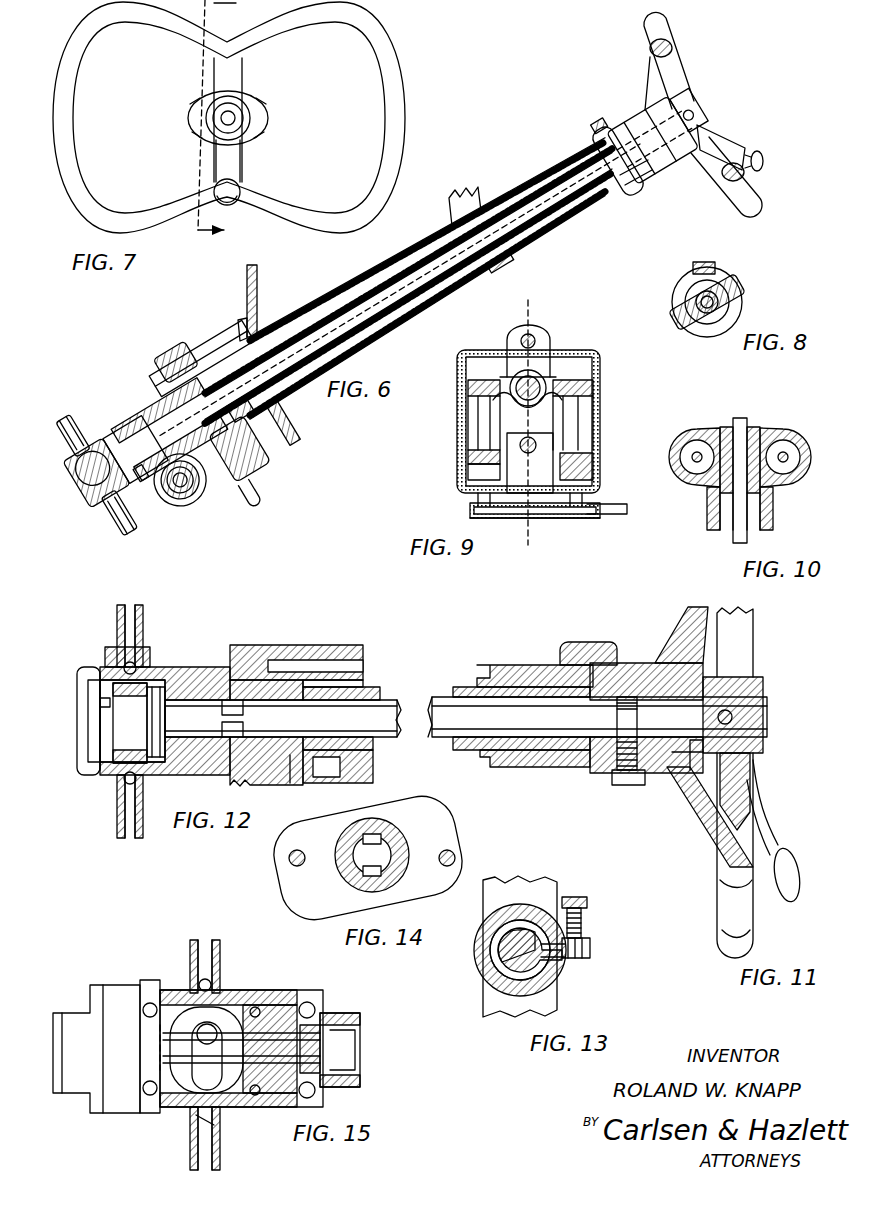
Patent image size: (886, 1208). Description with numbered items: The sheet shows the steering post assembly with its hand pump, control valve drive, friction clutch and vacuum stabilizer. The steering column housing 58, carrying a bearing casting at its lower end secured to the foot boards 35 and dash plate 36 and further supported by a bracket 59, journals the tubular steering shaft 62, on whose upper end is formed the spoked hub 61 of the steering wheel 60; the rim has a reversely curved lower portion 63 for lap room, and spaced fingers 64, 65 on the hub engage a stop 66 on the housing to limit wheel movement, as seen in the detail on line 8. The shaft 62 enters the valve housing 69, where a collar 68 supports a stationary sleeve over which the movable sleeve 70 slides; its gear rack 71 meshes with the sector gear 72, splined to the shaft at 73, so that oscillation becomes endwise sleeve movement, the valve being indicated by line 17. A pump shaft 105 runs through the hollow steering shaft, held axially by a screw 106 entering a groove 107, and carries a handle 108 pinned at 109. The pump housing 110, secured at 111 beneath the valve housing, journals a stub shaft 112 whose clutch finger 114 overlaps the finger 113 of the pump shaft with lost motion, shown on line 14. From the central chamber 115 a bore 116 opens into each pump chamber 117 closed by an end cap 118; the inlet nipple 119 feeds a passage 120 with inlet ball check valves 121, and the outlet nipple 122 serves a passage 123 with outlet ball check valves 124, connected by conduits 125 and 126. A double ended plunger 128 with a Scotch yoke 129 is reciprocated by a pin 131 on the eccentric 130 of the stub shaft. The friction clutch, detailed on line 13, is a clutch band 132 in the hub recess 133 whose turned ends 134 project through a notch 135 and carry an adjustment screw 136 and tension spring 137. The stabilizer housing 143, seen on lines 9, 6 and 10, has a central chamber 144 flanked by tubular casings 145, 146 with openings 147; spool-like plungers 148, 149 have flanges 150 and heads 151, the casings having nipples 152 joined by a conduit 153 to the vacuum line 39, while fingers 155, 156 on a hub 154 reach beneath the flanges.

In FIG. 9, the section line 6— 6 is at (550, 297).
In FIG. 6, the section line 8— 8 is at (622, 110).
In FIG. 6, the section line 9— 9 is at (175, 356).
In FIG. 9, the section line 10— 10 is at (438, 418).
In FIG. 11, the section line 13— 13 is at (697, 655).
In FIG. 12, the section line 14— 14 is at (245, 615).
In FIG. 6, the section line 17— 17 is at (131, 372).
In FIG. 6, the foot boards 35 is at (290, 428).
In FIG. 6, the dash plate 36 is at (258, 269).
In FIG. 9, the vacuum line 39 is at (626, 515).
In FIG. 6, the steering column housing 58 is at (383, 278).
In FIG. 8, the steering column housing 58 is at (740, 320).
In FIG. 10, the steering column housing 58 is at (770, 517).
In FIG. 11, the steering column housing 58 is at (493, 666).
In FIG. 6, the bracket 59 is at (505, 265).
In FIG. 7, the steering wheel 60 is at (410, 95).
In FIG. 6, the steering wheel 60 is at (697, 80).
In FIG. 11, the steering wheel 60 is at (757, 630).
In FIG. 6, the spoked hub 61 is at (639, 125).
In FIG. 11, the spoked hub 61 is at (660, 663).
In FIG. 13, the spoked hub 61 is at (545, 985).
In FIG. 7, the tubular steering column or shaft 62 is at (273, 43).
In FIG. 6, the tubular steering column or shaft 62 is at (438, 250).
In FIG. 8, the tubular steering column or shaft 62 is at (705, 320).
In FIG. 9, the tubular steering column or shaft 62 is at (540, 380).
In FIG. 10, the tubular steering column or shaft 62 is at (728, 530).
In FIG. 11, the tubular steering column or shaft 62 is at (462, 688).
In FIG. 12, the tubular steering column or shaft 62 is at (365, 690).
In FIG. 7, the reversely curved rim portion 63 is at (297, 200).
In FIG. 11, the reversely curved rim portion 63 is at (720, 875).
In FIG. 7, the radially projecting finger 64 is at (186, 115).
In FIG. 6, the radially projecting finger 64 is at (640, 172).
In FIG. 8, the radially projecting finger 64 is at (672, 298).
In FIG. 7, the radially projecting finger 65 is at (252, 110).
In FIG. 8, the radially projecting finger 65 is at (738, 290).
In FIG. 6, the stop 66 is at (616, 114).
In FIG. 8, the stop 66 is at (714, 265).
In FIG. 11, the stop 66 is at (596, 634).
In FIG. 6, the collar 68 is at (175, 498).
In FIG. 6, the valve housing 69 is at (160, 385).
In FIG. 12, the valve housing 69 is at (305, 645).
In FIG. 6, the outer movable sleeve 70 is at (195, 497).
In FIG. 12, the gear rack 71 is at (366, 770).
In FIG. 6, the sector gear 72 is at (156, 487).
In FIG. 12, the sector gear 72 is at (300, 760).
In FIG. 12, the spline 73 is at (355, 680).
In FIG. 7, the pump shaft 105 is at (232, 123).
In FIG. 6, the pump shaft 105 is at (420, 278).
In FIG. 10, the pump shaft 105 is at (740, 420).
In FIG. 11, the pump shaft 105 is at (597, 697).
In FIG. 12, the pump shaft 105 is at (395, 737).
In FIG. 14, the pump shaft 105 is at (385, 858).
In FIG. 13, the pump shaft 105 is at (505, 965).
In FIG. 11, the screw 106 is at (628, 785).
In FIG. 11, the peripheral groove 107 is at (628, 697).
In FIG. 7, the handle 108 is at (230, 170).
In FIG. 6, the handle 108 is at (728, 151).
In FIG. 11, the handle 108 is at (760, 835).
In FIG. 6, the pin 109 is at (692, 118).
In FIG. 11, the pin 109 is at (735, 717).
In FIG. 6, the pump housing 110 is at (92, 443).
In FIG. 12, the pump housing 110 is at (188, 668).
In FIG. 14, the pump housing 110 is at (300, 893).
In FIG. 15, the pump housing 110 is at (125, 995).
In FIG. 14, the securing point 111 is at (290, 862).
In FIG. 6, the stub shaft 112 is at (120, 468).
In FIG. 12, the stub shaft 112 is at (185, 737).
In FIG. 12, the clutch finger 113 is at (235, 700).
In FIG. 14, the clutch finger 113 is at (378, 843).
In FIG. 12, the clutch finger 114 is at (237, 740).
In FIG. 14, the clutch finger 114 is at (368, 874).
In FIG. 12, the central chamber 115 is at (100, 725).
In FIG. 15, the central chamber 115 is at (235, 1012).
In FIG. 15, the bore 116 is at (268, 1108).
In FIG. 15, the pump chamber 117 is at (345, 1047).
In FIG. 15, the end cap 118 is at (53, 1020).
In FIG. 12, the inlet nipple 119 is at (122, 808).
In FIG. 15, the inlet nipple 119 is at (190, 1152).
In FIG. 12, the inlet passage 120 is at (136, 780).
In FIG. 15, the inlet passage 120 is at (213, 1125).
In FIG. 15, the inlet ball check valve 121 is at (316, 1093).
In FIG. 12, the outlet nipple 122 is at (135, 632).
In FIG. 15, the outlet nipple 122 is at (210, 965).
In FIG. 12, the outlet passage 123 is at (123, 665).
In FIG. 15, the outlet passage 123 is at (168, 998).
In FIG. 15, the outlet ball check valve 124 is at (315, 1010).
In FIG. 6, the inlet conduit 125 is at (113, 521).
In FIG. 12, the inlet conduit 125 is at (120, 834).
In FIG. 15, the inlet conduit 125 is at (220, 1165).
In FIG. 6, the outlet conduit 126 is at (62, 410).
In FIG. 12, the outlet conduit 126 is at (142, 608).
In FIG. 15, the outlet conduit 126 is at (212, 945).
In FIG. 12, the double ended plunger 128 is at (86, 752).
In FIG. 15, the double ended plunger 128 is at (322, 1025).
In FIG. 12, the Scotch yoke 129 is at (97, 772).
In FIG. 12, the eccentric 130 is at (158, 687).
In FIG. 12, the pin 131 is at (100, 702).
In FIG. 15, the pin 131 is at (210, 1027).
In FIG. 11, the clutch band 132 is at (738, 682).
In FIG. 13, the clutch band 132 is at (491, 950).
In FIG. 11, the recess 133 is at (690, 765).
In FIG. 13, the recess 133 is at (500, 935).
In FIG. 13, the turned ends 134 is at (592, 955).
In FIG. 13, the notch 135 is at (560, 965).
In FIG. 13, the adjustment screw 136 is at (580, 898).
In FIG. 13, the tension spring 137 is at (582, 918).
In FIG. 6, the stabilizer housing 143 is at (272, 456).
In FIG. 9, the stabilizer housing 143 is at (600, 358).
In FIG. 6, the central chamber 144 is at (268, 412).
In FIG. 9, the central chamber 144 is at (513, 370).
In FIG. 9, the tubular casing 145 is at (468, 440).
In FIG. 9, the tubular casing 146 is at (594, 438).
In FIG. 9, the opening 147 is at (560, 425).
In FIG. 9, the operating plunger 148 is at (478, 423).
In FIG. 9, the operating plunger 149 is at (580, 424).
In FIG. 9, the annular flange 150 is at (594, 385).
In FIG. 9, the head portion 151 is at (470, 468).
In FIG. 6, the nipple 152 is at (262, 491).
In FIG. 9, the nipple 152 is at (470, 382).
In FIG. 9, the conduit 153 is at (543, 519).
In FIG. 9, the hub 154 is at (540, 350).
In FIG. 9, the finger 155 is at (466, 408).
In FIG. 9, the finger 156 is at (594, 408).